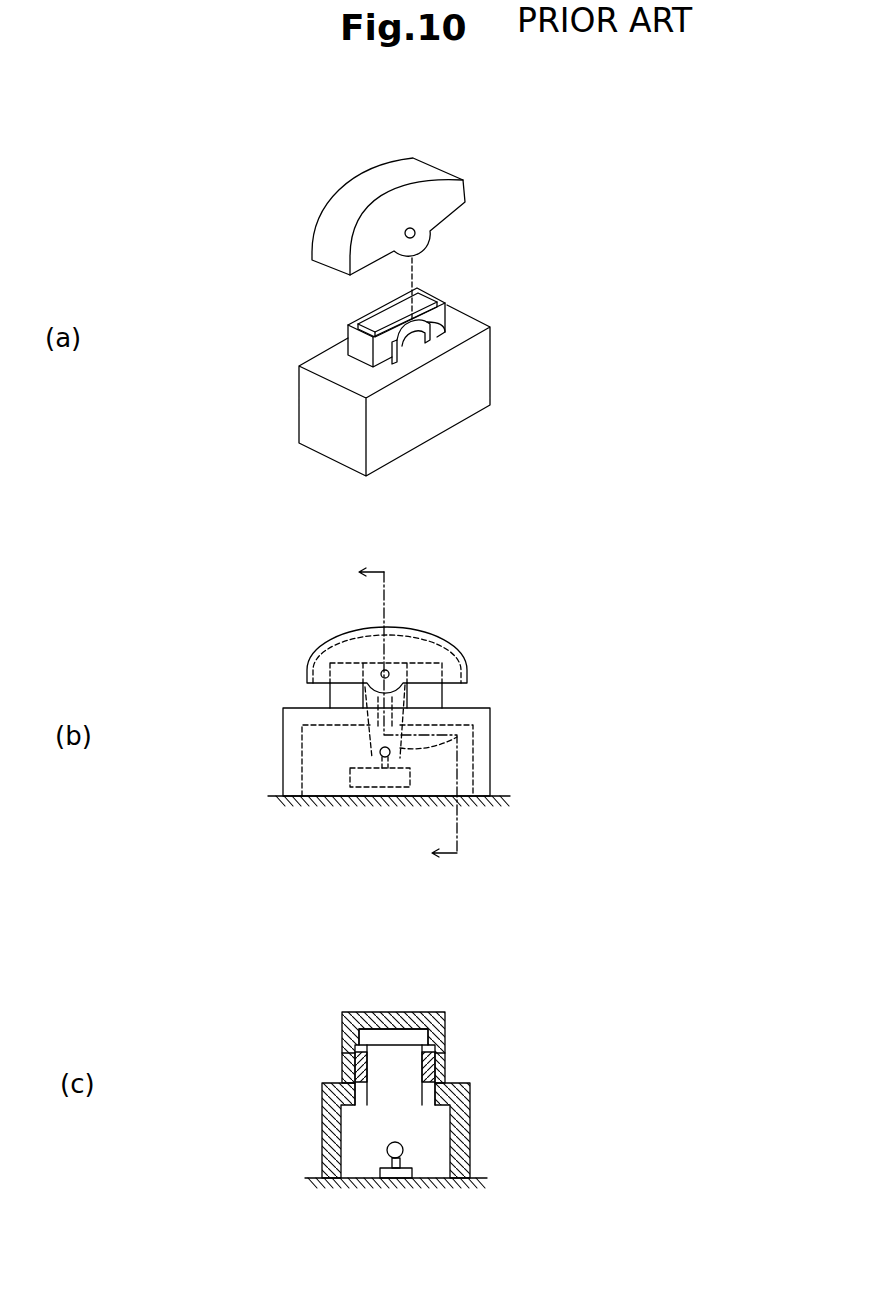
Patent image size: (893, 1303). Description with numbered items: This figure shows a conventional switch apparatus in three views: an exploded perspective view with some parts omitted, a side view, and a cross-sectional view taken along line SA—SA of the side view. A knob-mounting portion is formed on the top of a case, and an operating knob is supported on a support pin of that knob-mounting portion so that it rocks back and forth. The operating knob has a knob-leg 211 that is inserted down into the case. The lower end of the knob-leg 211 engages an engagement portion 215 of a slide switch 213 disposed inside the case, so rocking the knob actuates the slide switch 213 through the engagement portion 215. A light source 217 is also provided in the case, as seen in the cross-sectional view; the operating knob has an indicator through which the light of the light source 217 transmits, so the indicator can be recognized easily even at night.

The knob-leg 211 is at (490, 710).
The slide switch 213 is at (316, 803).
The engagement portion 215 is at (377, 768).
The light source 217 is at (387, 1148).